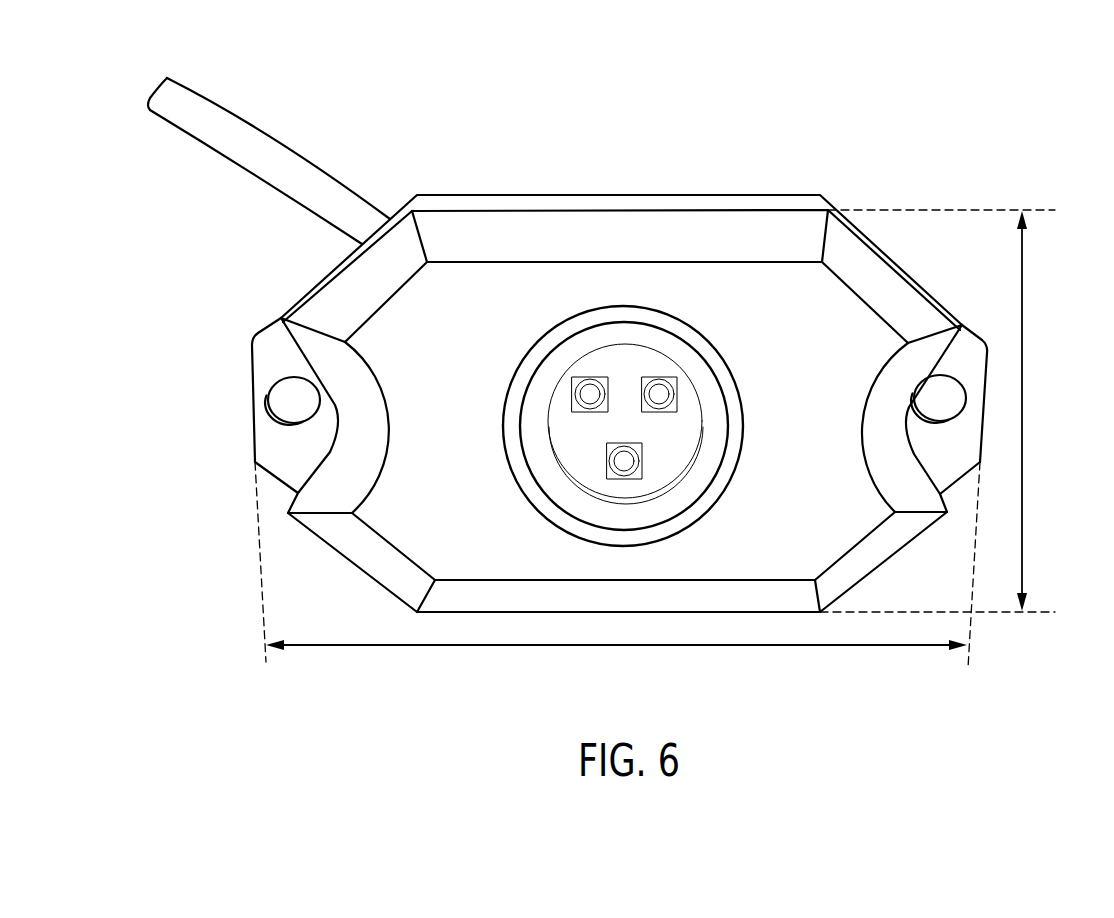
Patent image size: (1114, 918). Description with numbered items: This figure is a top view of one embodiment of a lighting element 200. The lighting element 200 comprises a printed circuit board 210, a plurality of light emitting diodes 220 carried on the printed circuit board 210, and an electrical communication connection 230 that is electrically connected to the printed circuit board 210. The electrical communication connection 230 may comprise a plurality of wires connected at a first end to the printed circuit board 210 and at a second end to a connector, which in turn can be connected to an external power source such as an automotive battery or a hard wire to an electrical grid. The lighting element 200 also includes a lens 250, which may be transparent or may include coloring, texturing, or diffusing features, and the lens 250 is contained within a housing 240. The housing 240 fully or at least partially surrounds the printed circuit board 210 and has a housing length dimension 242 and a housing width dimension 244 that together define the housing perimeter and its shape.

The lighting element 200 is at (955, 120).
The printed circuit board 210 is at (628, 363).
The light emitting diode 220 is at (592, 394).
The electrical communication connection 230 is at (278, 150).
The housing 240 is at (465, 290).
The housing length dimension 242 is at (713, 647).
The housing width dimension 244 is at (1022, 418).
The lens 250 is at (560, 363).